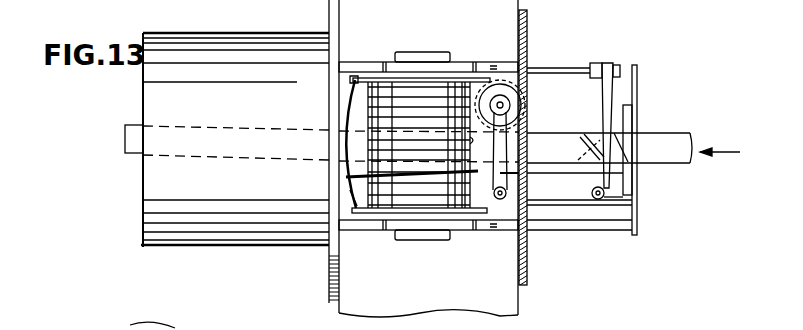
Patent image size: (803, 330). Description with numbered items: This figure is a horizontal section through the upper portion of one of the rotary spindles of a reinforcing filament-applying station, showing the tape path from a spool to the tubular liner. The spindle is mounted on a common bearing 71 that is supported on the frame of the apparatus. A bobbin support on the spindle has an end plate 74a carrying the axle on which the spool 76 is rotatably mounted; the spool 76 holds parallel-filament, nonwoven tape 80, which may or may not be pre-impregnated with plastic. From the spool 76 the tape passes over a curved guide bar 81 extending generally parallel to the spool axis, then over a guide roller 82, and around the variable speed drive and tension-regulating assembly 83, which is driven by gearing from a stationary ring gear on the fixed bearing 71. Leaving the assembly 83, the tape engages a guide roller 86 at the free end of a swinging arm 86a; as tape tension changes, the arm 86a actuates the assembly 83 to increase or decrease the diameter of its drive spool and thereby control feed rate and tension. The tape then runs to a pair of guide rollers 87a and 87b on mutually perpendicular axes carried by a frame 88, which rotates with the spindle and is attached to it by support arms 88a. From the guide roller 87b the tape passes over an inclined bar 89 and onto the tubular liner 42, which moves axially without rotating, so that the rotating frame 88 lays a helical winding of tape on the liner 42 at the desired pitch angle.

The common bearing 71 is at (224, 46).
The end plate 74a is at (362, 62).
The spool 76 is at (352, 80).
The parallel-filament nonwoven tape 80 is at (345, 176).
The curved guide bar 81 is at (350, 192).
The guide roller 82 is at (474, 152).
The variable speed drive and tension-regulating assembly 83 is at (510, 104).
The guide roller 86 is at (507, 199).
The swinging arm 86a is at (512, 175).
The tubular liner 42 is at (670, 134).
The frame 88 is at (639, 88).
The support arms 88a is at (583, 67).
The guide roller 87a is at (592, 196).
The guide roller 87b is at (619, 66).
The inclined bar 89 is at (588, 134).